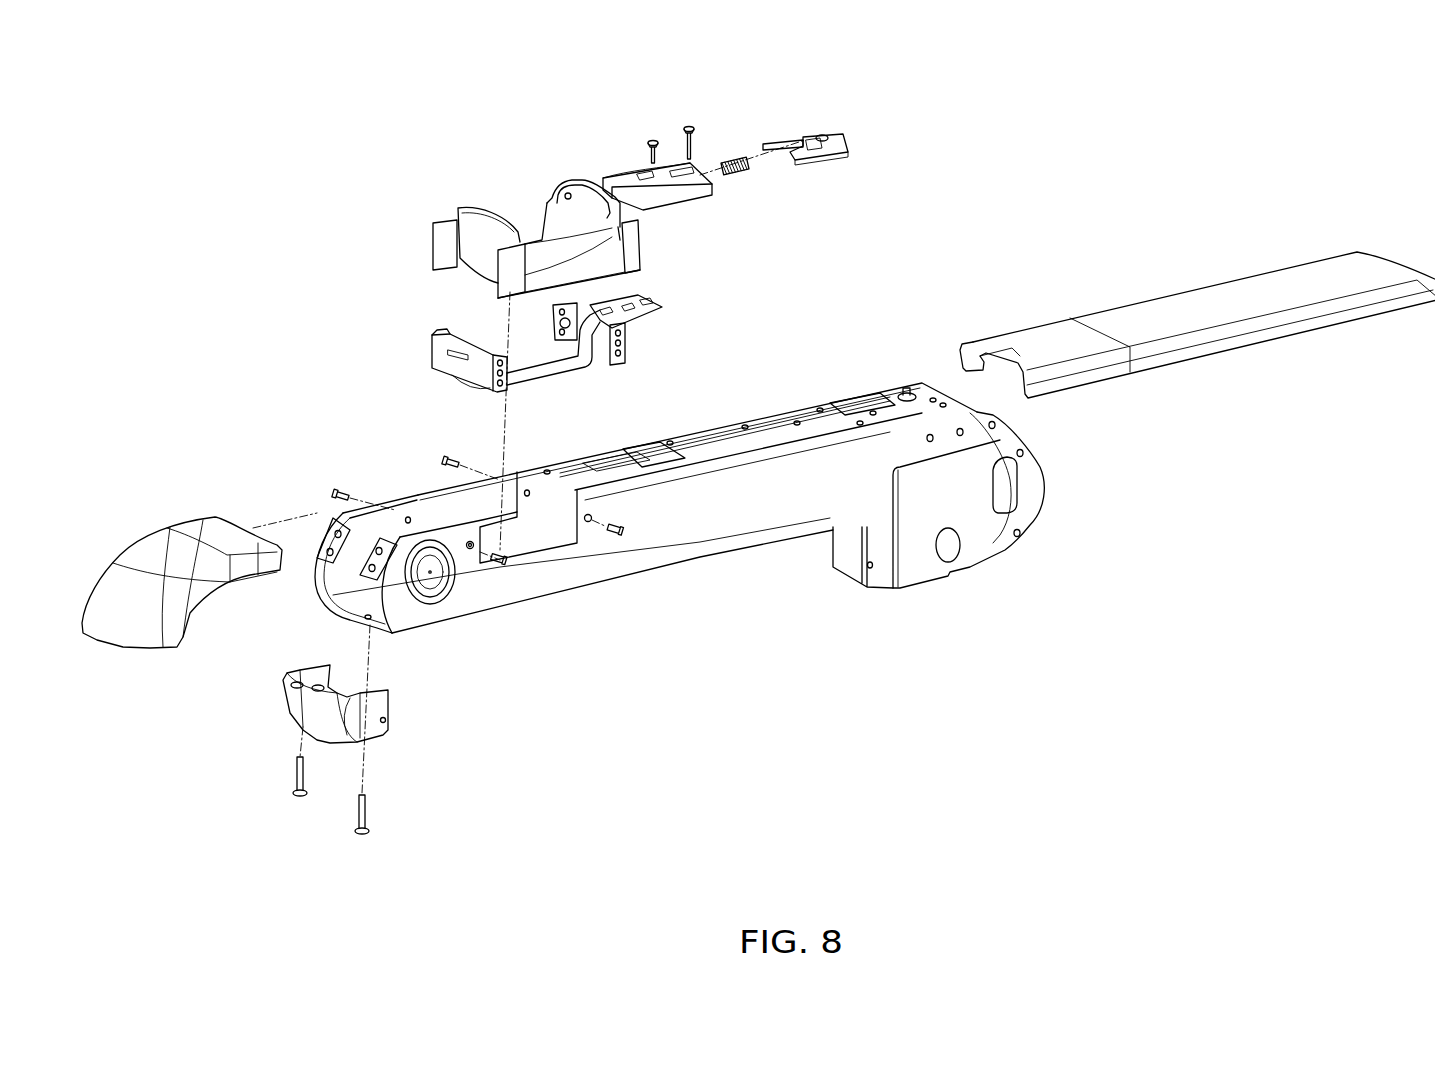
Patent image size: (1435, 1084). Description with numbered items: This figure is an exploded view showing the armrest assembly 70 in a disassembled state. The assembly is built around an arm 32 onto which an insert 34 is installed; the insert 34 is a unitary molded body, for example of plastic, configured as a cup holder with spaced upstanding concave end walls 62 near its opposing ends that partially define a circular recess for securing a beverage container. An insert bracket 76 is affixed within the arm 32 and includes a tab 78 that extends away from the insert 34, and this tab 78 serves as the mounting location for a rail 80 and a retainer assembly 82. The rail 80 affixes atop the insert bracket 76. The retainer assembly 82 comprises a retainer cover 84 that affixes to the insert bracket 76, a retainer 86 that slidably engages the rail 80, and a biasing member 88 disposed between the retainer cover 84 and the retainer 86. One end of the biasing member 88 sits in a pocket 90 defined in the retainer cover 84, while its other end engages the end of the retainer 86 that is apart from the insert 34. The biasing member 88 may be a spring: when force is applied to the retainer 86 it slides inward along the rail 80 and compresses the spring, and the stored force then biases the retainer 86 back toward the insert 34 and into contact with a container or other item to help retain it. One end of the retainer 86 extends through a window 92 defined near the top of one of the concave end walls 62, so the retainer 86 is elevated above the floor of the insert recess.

The arm 32 is at (813, 403).
The insert 34 is at (473, 222).
The concave end walls 62 is at (563, 220).
The armrest assembly 70 is at (80, 890).
The insert bracket 76 is at (637, 345).
The tab 78 is at (650, 293).
The rail 80 is at (705, 200).
The retainer assembly 82 is at (737, 190).
The retainer cover 84 is at (807, 137).
The retainer 86 is at (608, 175).
The biasing member 88 is at (745, 165).
The pocket 90 is at (800, 148).
The window 92 is at (580, 190).